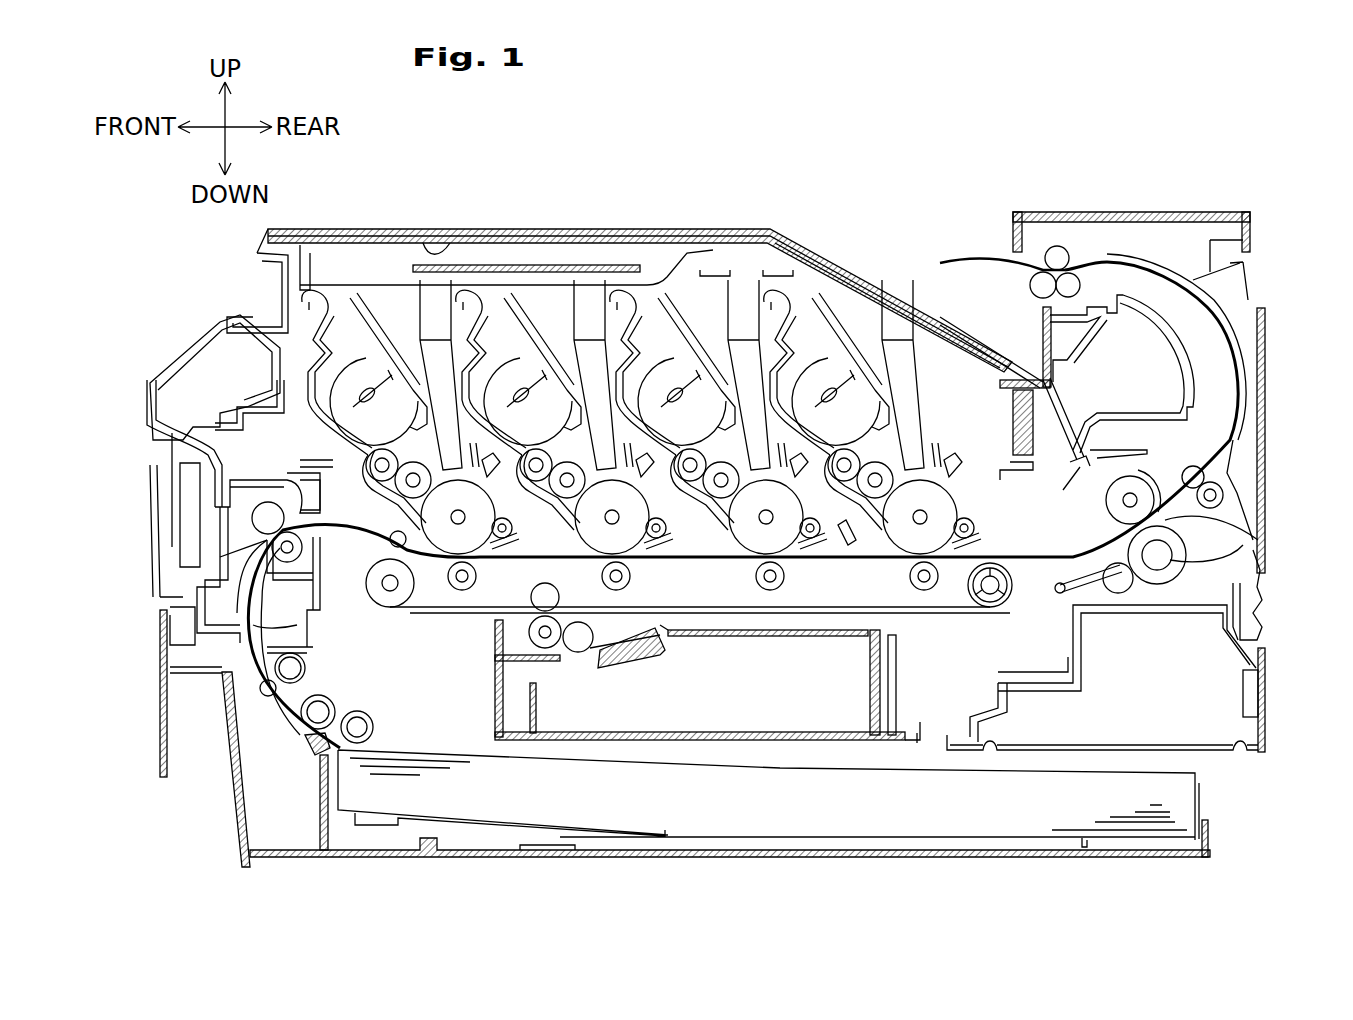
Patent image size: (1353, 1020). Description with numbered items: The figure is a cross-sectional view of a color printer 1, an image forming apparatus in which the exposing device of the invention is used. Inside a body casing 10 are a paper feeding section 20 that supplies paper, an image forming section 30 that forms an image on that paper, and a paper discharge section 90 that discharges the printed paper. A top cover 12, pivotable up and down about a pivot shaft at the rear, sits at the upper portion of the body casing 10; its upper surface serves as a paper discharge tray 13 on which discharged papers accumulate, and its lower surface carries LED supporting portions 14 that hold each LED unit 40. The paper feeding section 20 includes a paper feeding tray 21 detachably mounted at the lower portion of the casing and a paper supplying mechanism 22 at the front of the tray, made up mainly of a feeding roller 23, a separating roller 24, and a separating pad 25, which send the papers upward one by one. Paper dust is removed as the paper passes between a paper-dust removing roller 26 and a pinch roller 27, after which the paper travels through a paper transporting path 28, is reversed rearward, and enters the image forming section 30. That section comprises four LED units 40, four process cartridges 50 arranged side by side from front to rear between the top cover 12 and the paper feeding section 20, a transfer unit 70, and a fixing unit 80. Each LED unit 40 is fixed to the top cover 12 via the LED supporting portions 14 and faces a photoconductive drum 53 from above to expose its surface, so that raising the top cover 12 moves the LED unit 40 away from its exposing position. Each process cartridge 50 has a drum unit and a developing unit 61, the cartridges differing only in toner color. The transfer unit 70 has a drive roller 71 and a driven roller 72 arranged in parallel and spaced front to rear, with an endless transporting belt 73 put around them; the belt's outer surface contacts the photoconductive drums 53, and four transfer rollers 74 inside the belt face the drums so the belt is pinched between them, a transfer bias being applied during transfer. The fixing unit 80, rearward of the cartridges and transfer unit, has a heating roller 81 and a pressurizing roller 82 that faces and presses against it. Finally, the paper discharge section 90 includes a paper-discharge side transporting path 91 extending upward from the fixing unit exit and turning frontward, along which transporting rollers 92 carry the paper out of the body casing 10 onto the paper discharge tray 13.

The color printer 1 is at (1084, 107).
The body casing 10 is at (1173, 183).
The top cover 12 is at (653, 207).
The paper discharge tray 13 is at (795, 228).
The LED supporting portions 14 is at (436, 300).
The paper feeding section 20 is at (215, 846).
The paper feeding tray 21 is at (227, 797).
The paper supplying mechanism 22 is at (290, 742).
The feeding roller 23 is at (374, 720).
The separating roller 24 is at (328, 700).
The separating pad 25 is at (308, 742).
The paper-dust removing roller 26 is at (292, 665).
The pinch roller 27 is at (272, 682).
The paper transporting path 28 is at (255, 623).
The image forming section 30 is at (285, 343).
The LED unit 40 is at (415, 352).
The process cartridge 50 is at (373, 274).
The photoconductive drum 53 is at (446, 537).
The developing unit 61 is at (843, 545).
The transfer unit 70 is at (936, 635).
The drive roller 71 is at (1003, 590).
The driven roller 72 is at (392, 600).
The transporting belt 73 is at (417, 615).
The transfer roller 74 is at (476, 583).
The fixing unit 80 is at (1212, 546).
The heating roller 81 is at (1215, 505).
The pressurizing roller 82 is at (1225, 560).
The paper discharge section 90 is at (993, 242).
The paper-discharge side transporting path 91 is at (1248, 430).
The transporting rollers 92 is at (1052, 258).